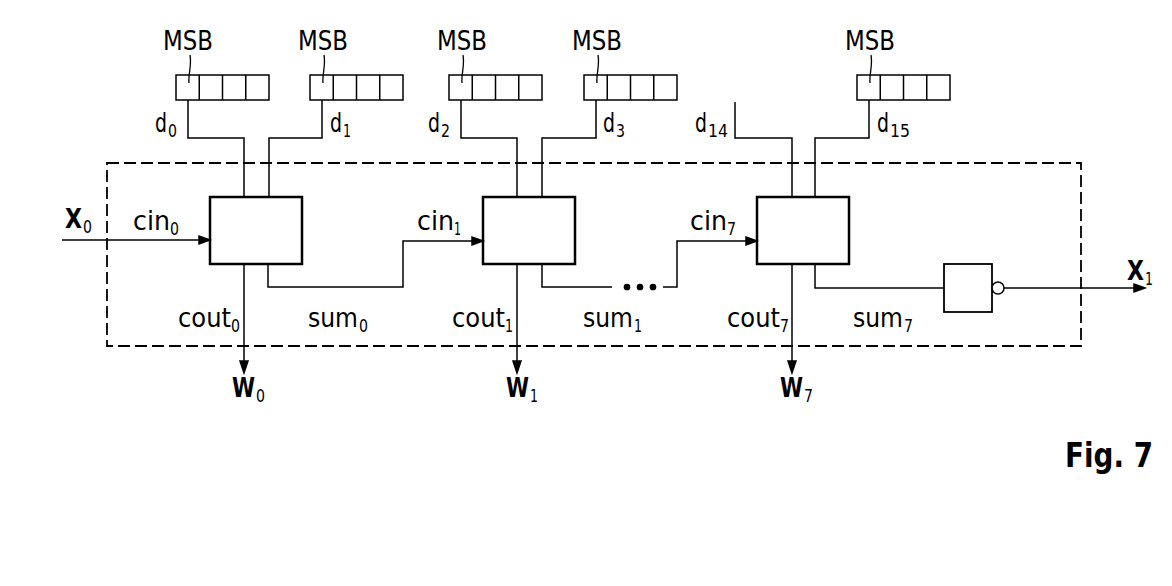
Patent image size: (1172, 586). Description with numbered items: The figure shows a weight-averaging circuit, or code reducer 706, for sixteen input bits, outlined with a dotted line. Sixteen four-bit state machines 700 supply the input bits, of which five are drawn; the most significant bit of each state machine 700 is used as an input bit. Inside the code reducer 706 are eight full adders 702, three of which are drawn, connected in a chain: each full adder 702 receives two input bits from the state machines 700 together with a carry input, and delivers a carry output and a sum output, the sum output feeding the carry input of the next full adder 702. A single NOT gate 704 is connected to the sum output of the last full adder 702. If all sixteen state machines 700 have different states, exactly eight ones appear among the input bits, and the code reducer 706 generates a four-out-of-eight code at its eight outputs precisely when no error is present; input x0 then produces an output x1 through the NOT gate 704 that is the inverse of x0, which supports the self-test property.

The state machine 700 is at (218, 75).
The full adder 702 is at (292, 219).
The NOT gate 704 is at (955, 305).
The code reducer 706 is at (1027, 177).